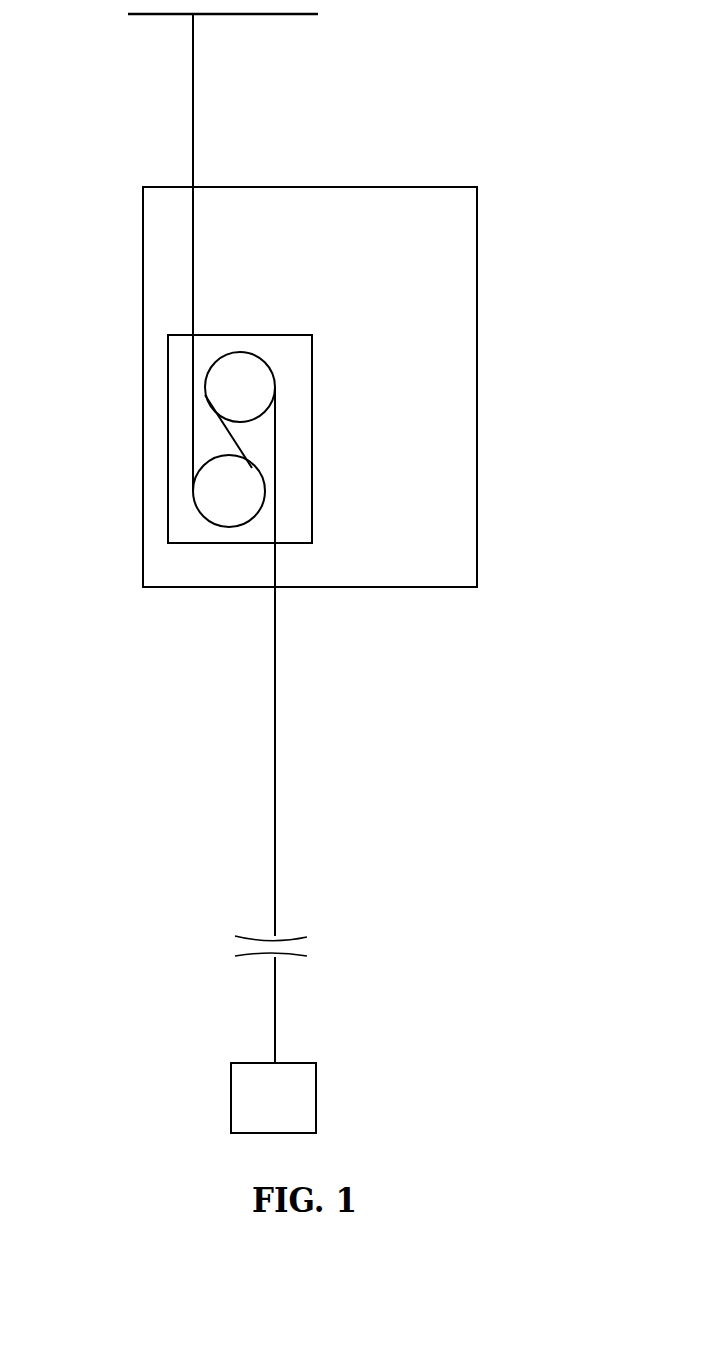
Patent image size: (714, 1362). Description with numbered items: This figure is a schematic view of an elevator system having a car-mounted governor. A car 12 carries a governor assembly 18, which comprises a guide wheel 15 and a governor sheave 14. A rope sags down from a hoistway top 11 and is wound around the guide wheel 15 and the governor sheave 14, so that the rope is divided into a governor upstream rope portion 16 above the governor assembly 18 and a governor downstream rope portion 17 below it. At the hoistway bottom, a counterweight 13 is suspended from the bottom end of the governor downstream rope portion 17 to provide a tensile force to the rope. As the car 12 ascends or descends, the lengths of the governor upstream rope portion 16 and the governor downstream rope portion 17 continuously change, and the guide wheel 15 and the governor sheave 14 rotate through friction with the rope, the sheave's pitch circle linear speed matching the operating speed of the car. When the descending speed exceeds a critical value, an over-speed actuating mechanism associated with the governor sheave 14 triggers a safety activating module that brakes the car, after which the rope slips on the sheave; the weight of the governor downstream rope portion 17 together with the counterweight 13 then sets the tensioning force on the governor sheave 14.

The hoistway top 11 is at (272, 14).
The car 12 is at (417, 352).
The counterweight 13 is at (302, 1097).
The governor sheave 14 is at (248, 375).
The guide wheel 15 is at (229, 505).
The governor upstream rope portion 16 is at (192, 278).
The governor downstream rope portion 17 is at (275, 637).
The governor assembly 18 is at (312, 425).